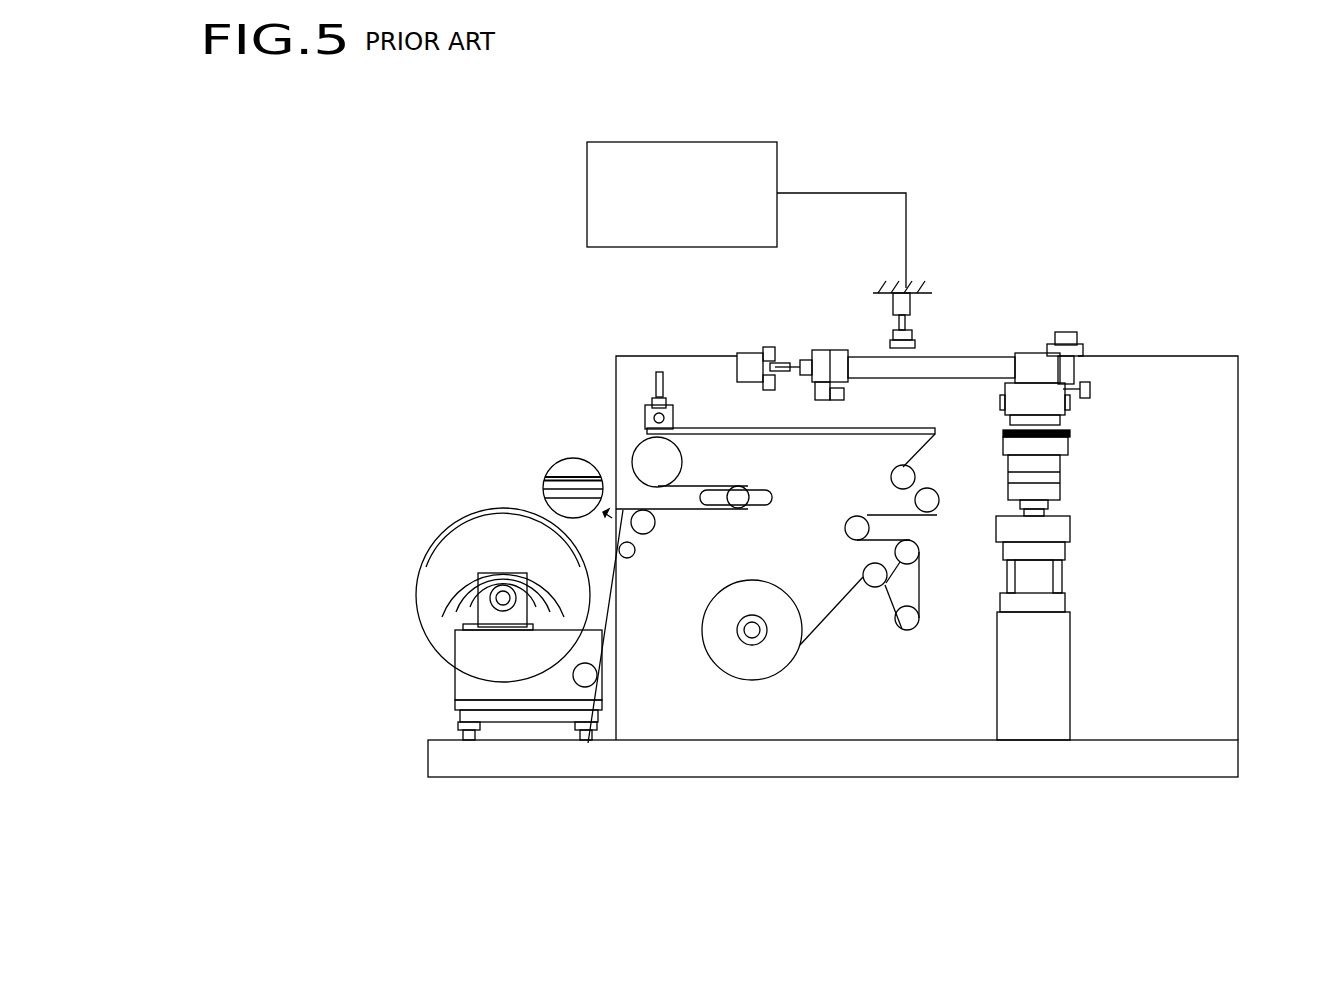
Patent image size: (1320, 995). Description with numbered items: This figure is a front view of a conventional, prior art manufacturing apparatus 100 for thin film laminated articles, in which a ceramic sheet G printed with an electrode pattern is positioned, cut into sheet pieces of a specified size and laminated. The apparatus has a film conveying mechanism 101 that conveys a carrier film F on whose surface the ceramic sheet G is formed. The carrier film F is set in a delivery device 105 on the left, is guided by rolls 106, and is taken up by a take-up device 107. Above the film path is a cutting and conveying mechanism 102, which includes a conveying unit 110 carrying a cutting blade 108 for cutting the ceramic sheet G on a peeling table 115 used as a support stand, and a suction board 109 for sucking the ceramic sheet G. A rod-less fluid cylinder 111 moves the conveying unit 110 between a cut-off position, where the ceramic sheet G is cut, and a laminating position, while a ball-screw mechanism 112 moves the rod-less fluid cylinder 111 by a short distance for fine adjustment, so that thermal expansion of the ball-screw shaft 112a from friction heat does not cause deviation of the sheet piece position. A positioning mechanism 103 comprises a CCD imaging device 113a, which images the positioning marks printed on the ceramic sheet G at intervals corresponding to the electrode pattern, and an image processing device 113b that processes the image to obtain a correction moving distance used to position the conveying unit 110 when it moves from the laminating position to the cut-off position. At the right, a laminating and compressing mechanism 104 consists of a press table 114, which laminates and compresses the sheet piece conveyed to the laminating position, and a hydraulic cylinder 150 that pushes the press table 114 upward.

The manufacturing apparatus 100 is at (1262, 182).
The film conveying mechanism 101 is at (645, 712).
The cutting and conveying mechanism 102 is at (1005, 340).
The positioning mechanism 103 is at (915, 182).
The laminating and compressing mechanism 104 is at (1152, 537).
The delivery device 105 is at (440, 562).
The rolls 106 is at (659, 490).
The take-up device 107 is at (743, 681).
The cutting blade 108 is at (1005, 405).
The suction board 109 is at (1068, 437).
The conveying unit 110 is at (1047, 402).
The rod-less fluid cylinder 111 is at (948, 357).
The ball-screw mechanism 112 is at (752, 350).
The ball-screw shaft 112a is at (805, 360).
The CCD imaging device 113a is at (893, 306).
The image processing device 113b is at (741, 142).
The press table 114 is at (1060, 458).
The peeling table 115 is at (882, 430).
The hydraulic cylinder 150 is at (1062, 512).
The carrier film F is at (545, 497).
The ceramic sheet G is at (573, 478).